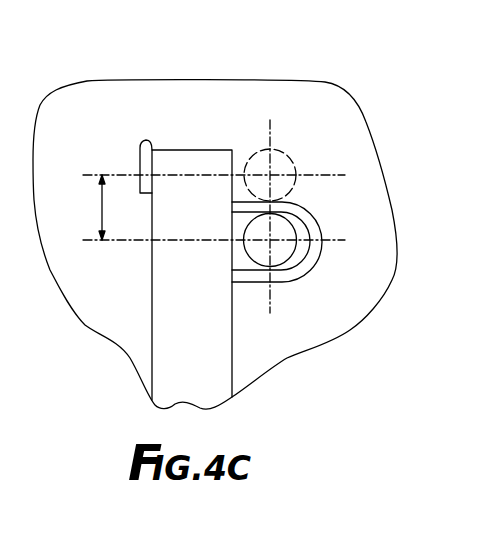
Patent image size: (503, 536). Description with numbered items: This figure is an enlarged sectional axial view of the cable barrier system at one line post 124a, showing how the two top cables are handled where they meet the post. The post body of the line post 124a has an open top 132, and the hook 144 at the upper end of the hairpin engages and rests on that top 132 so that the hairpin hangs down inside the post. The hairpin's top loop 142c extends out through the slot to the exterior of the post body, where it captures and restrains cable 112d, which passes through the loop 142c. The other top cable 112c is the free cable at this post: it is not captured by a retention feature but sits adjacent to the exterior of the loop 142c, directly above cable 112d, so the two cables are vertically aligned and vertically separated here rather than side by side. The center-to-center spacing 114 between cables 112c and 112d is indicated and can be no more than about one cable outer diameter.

The line post 124a is at (232, 343).
The open top 132 is at (195, 148).
The hook 144 is at (148, 141).
The center-to-center spacing 114 is at (102, 213).
The cable 112c is at (287, 150).
The top loop 142c is at (315, 265).
The cable 112d is at (296, 228).